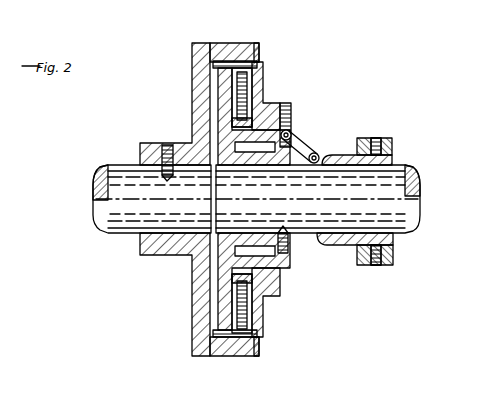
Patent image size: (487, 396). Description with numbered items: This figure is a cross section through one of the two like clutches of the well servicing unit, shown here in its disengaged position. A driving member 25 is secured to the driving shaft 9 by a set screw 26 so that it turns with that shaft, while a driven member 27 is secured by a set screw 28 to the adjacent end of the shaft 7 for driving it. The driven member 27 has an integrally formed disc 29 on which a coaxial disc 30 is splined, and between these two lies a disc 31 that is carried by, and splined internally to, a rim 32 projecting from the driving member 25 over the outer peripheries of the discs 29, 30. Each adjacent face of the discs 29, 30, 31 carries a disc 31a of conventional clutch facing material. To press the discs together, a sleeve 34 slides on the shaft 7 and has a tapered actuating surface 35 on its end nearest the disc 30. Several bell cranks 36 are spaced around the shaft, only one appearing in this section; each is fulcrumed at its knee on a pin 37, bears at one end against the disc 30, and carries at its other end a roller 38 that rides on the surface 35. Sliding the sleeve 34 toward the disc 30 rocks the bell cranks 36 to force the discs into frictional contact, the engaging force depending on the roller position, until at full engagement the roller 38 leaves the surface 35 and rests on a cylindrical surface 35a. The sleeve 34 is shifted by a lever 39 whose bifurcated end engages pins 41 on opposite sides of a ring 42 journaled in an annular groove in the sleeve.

The shaft 7 is at (418, 211).
The driving shaft 9 is at (107, 204).
The driving member 25 is at (192, 80).
The set screw 26 is at (160, 173).
The driven member 27 is at (232, 246).
The set screw 28 is at (270, 255).
The disc 29 is at (220, 115).
The disc 30 is at (263, 92).
The disc 31 is at (257, 43).
The disc of clutch facing material 31a is at (262, 72).
The rim 32 is at (226, 47).
The sleeve 34 is at (343, 246).
The tapered actuating surface 35 is at (325, 243).
The cylindrical surface 35a is at (338, 156).
The bell crank 36 is at (300, 144).
The pin 37 is at (291, 122).
The roller 38 is at (316, 152).
The lever 39 is at (388, 138).
The pin 41 is at (376, 140).
The ring 42 is at (393, 246).